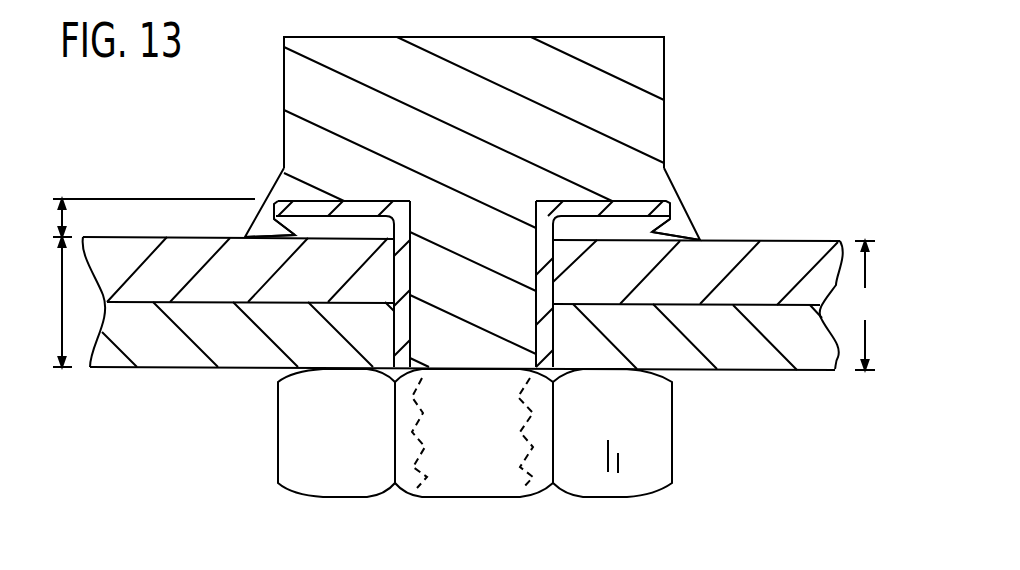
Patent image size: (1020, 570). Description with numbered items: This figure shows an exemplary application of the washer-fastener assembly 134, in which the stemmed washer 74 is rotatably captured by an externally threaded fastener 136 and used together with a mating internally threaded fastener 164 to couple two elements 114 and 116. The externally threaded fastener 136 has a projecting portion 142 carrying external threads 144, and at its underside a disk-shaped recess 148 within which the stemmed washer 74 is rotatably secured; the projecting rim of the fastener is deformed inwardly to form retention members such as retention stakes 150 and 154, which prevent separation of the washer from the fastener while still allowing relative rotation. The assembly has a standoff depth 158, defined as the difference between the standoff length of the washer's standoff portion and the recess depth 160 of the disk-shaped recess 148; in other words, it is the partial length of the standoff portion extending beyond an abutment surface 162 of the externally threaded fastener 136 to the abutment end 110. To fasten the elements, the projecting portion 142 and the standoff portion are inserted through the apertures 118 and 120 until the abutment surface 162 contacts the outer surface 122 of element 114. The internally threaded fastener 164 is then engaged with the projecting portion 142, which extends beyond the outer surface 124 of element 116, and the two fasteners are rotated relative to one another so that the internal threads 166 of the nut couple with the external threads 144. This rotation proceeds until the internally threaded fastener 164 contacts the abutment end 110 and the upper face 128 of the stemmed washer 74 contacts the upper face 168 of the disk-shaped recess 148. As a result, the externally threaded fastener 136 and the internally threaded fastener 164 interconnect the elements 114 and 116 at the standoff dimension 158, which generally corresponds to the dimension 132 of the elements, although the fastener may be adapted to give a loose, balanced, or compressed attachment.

The washer-fastener assembly 134 is at (772, 80).
The externally threaded fastener 136 is at (668, 121).
The upper face of the stemmed washer 128 is at (472, 260).
The upper face of the disk-shaped recess 168 is at (278, 201).
The retention stake 150 is at (243, 220).
The recess depth 160 is at (65, 222).
The standoff depth 158 is at (63, 302).
The abutment surface 162 is at (266, 240).
The projecting portion 142 is at (370, 349).
The abutment end 110 is at (504, 296).
The external threads 144 is at (410, 467).
The internal threads 166 is at (525, 433).
The aperture 120 is at (553, 352).
The internally threaded fastener 164 is at (676, 451).
The stemmed washer 74 is at (585, 227).
The disk-shaped recess 148 is at (675, 212).
The retention stake 154 is at (657, 231).
The outer surface of element 114 122 is at (476, 307).
The element 114 is at (476, 253).
The dimension of the elements 132 is at (866, 305).
The aperture 118 is at (553, 262).
The element 116 is at (475, 371).
The outer surface of element 116 124 is at (840, 369).